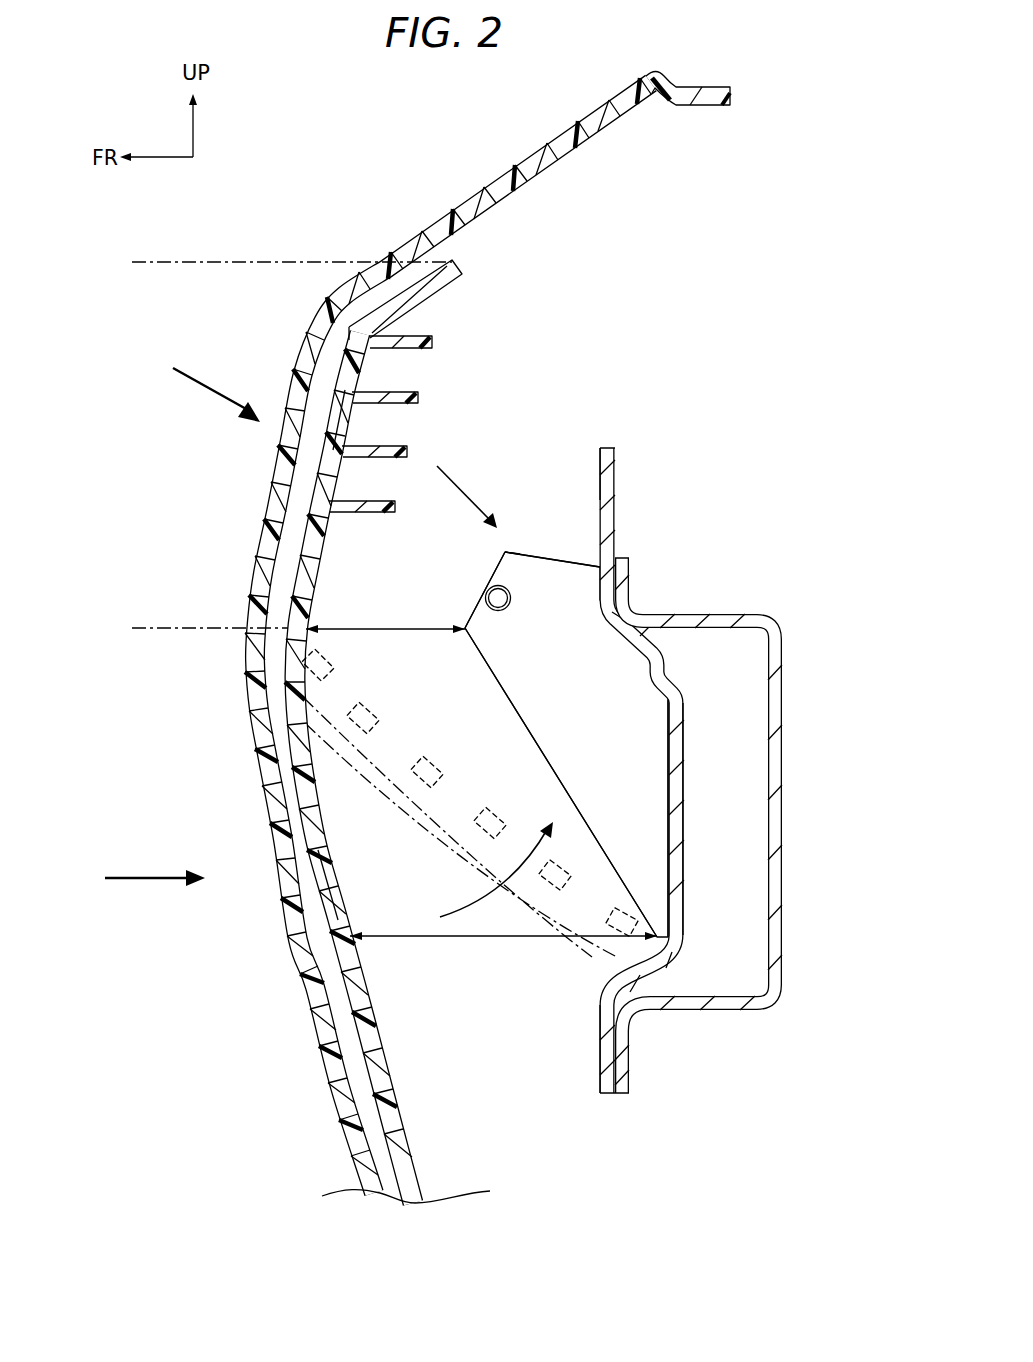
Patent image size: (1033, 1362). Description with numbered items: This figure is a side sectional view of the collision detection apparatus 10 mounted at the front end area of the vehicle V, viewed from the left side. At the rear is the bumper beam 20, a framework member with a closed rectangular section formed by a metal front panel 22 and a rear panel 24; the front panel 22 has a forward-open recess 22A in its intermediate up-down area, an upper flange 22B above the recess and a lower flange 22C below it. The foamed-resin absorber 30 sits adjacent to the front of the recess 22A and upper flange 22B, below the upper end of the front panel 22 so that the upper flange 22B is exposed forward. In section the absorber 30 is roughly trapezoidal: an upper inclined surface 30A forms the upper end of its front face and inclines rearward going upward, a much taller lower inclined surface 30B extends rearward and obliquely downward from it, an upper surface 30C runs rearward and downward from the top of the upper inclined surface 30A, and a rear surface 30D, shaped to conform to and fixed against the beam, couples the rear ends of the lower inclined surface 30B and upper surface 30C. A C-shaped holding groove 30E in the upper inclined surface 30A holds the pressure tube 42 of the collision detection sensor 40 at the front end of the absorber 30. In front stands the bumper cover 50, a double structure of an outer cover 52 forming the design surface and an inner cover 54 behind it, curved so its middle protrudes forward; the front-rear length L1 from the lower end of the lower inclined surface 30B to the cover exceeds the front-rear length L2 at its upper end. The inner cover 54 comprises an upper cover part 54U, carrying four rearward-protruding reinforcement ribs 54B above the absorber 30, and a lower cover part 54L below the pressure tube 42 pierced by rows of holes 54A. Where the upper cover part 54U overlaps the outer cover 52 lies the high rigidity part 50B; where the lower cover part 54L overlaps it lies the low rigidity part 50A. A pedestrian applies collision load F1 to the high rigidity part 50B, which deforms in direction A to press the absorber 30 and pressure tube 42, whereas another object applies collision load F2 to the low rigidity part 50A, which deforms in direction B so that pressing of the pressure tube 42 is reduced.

The collision detection apparatus 10 is at (340, 203).
The bumper beam 20 is at (752, 458).
The front panel 22 is at (616, 488).
The recess 22A is at (670, 755).
The upper flange 22B is at (602, 462).
The lower flange 22C is at (601, 1057).
The rear panel 24 is at (697, 613).
The absorber 30 is at (533, 735).
The upper inclined surface 30A is at (505, 554).
The lower inclined surface 30B is at (556, 775).
The upper surface 30C is at (562, 562).
The rear surface 30D is at (683, 815).
The holding groove 30E is at (490, 604).
The collision detection sensor 40 is at (486, 597).
The pressure tube 42 is at (485, 596).
The bumper cover 50 is at (600, 200).
The low rigidity part 50A is at (303, 983).
The high rigidity part 50B is at (132, 262).
The outer cover 52 is at (535, 172).
The inner cover 54 is at (462, 270).
The holes 54A is at (290, 737).
The reinforcement ribs 54B is at (432, 342).
The upper cover part 54U is at (313, 513).
The lower cover part 54L is at (313, 852).
The vehicle V is at (377, 126).
The direction of arrow A is at (476, 495).
The direction of arrow B is at (447, 908).
The collision load F1 is at (193, 380).
The collision load F2 is at (143, 882).
The front-rear length L1 is at (480, 940).
The front-rear length L2 is at (384, 632).